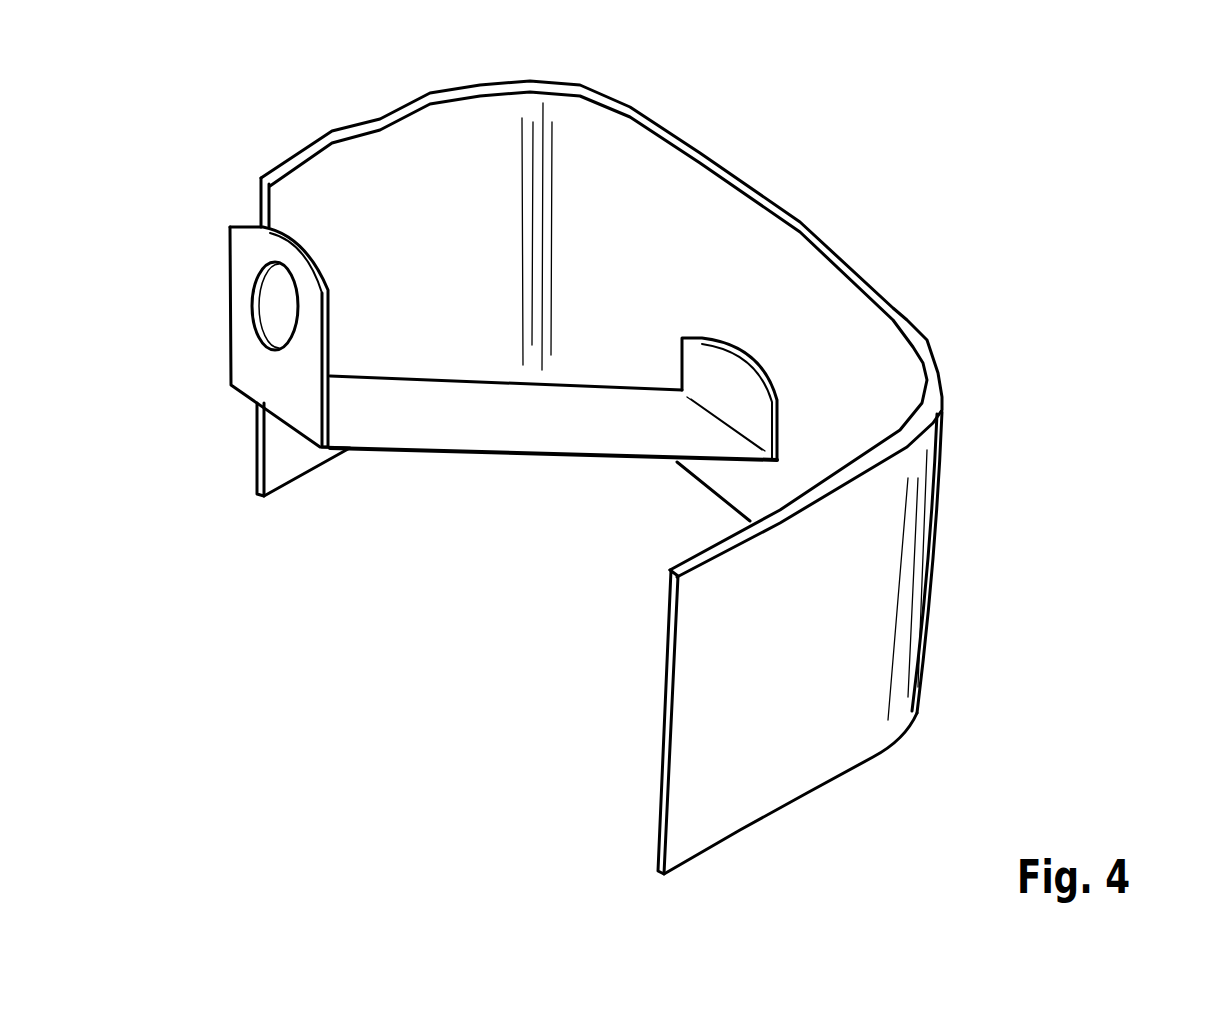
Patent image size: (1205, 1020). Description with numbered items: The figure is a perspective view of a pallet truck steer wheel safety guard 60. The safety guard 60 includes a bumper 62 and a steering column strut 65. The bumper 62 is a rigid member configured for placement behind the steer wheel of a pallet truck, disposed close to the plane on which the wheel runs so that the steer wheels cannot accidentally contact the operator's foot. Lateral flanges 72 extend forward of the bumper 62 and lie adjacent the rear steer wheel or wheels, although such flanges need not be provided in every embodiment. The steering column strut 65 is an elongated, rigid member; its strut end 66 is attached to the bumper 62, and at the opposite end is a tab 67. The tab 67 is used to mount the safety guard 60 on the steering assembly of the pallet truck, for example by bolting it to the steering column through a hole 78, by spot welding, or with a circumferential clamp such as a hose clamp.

The safety guard 60 is at (784, 140).
The bumper 62 is at (807, 243).
The steering column strut 65 is at (533, 430).
The strut end 66 is at (717, 365).
The tab 67 is at (267, 382).
The flanges 72 is at (393, 163).
The mounting hole 78 is at (275, 303).